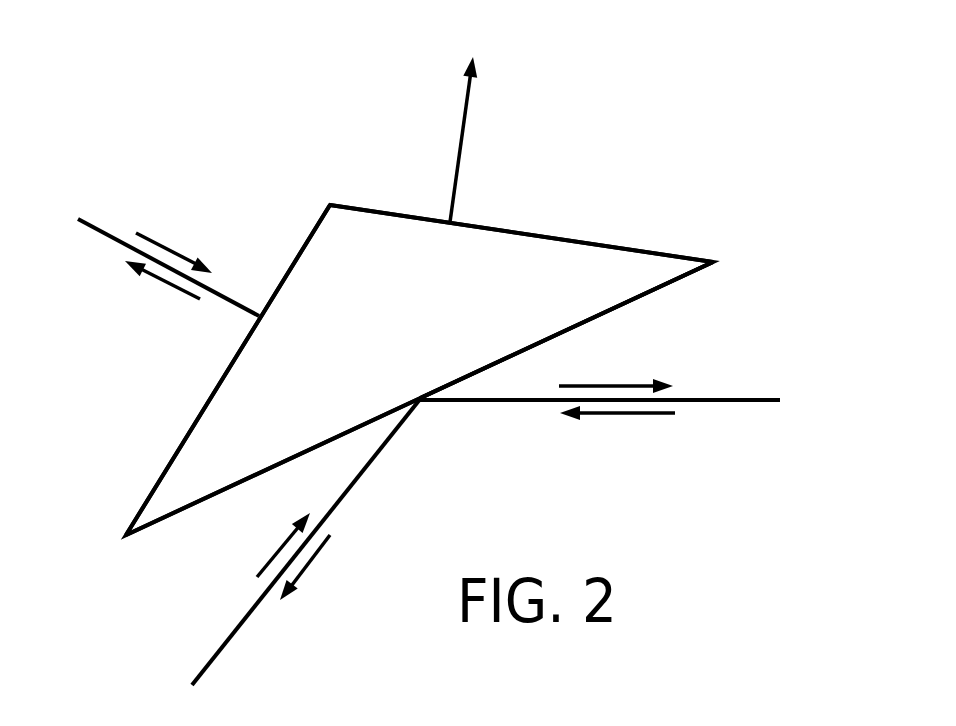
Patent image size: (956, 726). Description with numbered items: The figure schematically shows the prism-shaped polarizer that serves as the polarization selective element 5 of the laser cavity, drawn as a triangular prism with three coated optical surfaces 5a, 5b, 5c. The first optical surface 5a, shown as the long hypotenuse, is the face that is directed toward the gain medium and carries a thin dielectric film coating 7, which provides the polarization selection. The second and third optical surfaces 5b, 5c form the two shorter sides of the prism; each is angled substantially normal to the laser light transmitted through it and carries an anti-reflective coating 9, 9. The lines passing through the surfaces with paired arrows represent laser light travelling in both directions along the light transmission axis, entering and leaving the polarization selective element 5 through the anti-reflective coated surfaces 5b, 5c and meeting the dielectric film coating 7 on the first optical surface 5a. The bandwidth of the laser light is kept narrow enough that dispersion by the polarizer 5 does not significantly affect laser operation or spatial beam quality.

The polarization selective element 5 is at (180, 478).
The first optical surface 5a is at (362, 423).
The second optical surface 5b is at (280, 287).
The third optical surface 5c is at (517, 237).
The thin dielectric film coating 7 is at (638, 298).
The anti-reflective coating 9 is at (587, 242).